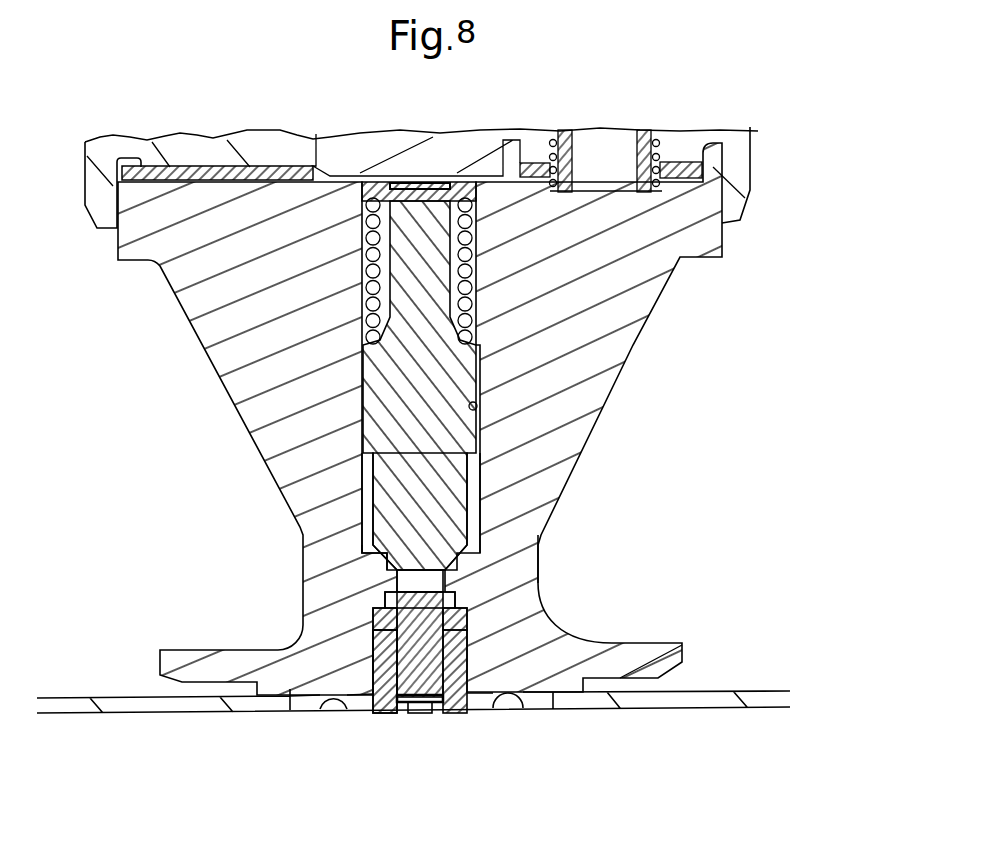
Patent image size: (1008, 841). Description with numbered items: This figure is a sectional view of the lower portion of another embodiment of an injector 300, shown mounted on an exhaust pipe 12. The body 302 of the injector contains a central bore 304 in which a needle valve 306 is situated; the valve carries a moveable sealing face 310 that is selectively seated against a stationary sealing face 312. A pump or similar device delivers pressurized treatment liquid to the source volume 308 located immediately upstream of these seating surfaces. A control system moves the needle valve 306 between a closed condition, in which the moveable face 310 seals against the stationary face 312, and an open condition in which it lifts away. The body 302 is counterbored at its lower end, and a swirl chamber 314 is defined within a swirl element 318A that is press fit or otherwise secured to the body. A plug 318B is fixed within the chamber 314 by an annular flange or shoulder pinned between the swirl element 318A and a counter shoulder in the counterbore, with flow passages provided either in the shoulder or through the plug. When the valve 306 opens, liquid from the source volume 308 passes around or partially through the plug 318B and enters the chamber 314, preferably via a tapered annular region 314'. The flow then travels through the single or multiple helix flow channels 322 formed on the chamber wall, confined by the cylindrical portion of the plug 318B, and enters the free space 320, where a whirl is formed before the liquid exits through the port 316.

The injector 300 is at (581, 87).
The body 302 is at (634, 350).
The central bore 304 is at (478, 418).
The needle valve 306 is at (450, 490).
The source volume 308 is at (480, 510).
The moveable sealing face 310 is at (538, 547).
The stationary sealing face 312 is at (390, 562).
The tapered annular region 314' is at (537, 572).
The swirl chamber 314 is at (527, 600).
The port 316 is at (468, 707).
The swirl element 318A is at (392, 708).
The plug 318B is at (408, 712).
The free space 320 is at (462, 660).
The helix flow channels 322 is at (383, 670).
The exhaust pipe 12 is at (75, 698).